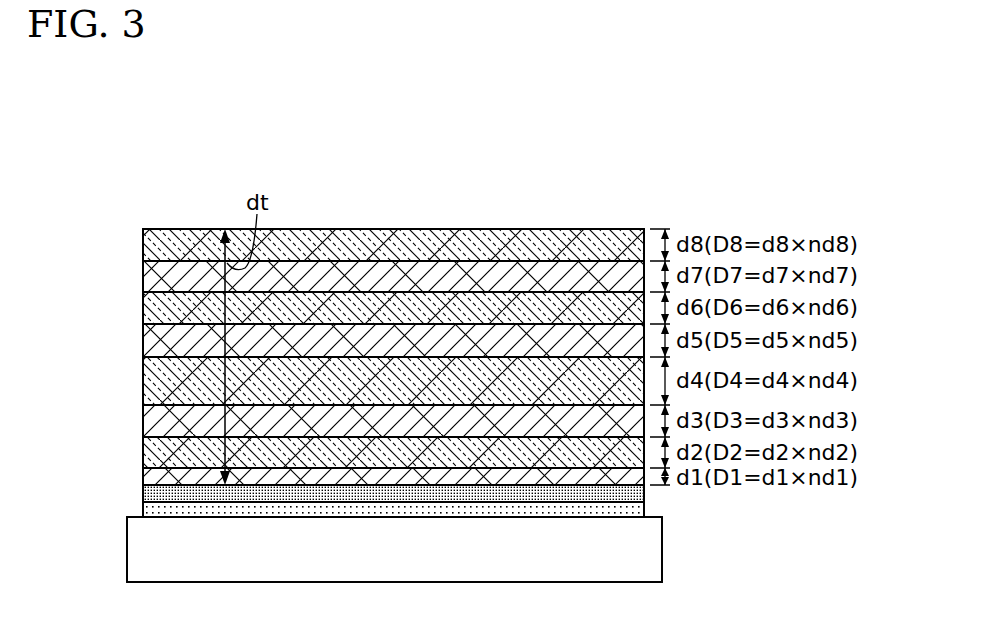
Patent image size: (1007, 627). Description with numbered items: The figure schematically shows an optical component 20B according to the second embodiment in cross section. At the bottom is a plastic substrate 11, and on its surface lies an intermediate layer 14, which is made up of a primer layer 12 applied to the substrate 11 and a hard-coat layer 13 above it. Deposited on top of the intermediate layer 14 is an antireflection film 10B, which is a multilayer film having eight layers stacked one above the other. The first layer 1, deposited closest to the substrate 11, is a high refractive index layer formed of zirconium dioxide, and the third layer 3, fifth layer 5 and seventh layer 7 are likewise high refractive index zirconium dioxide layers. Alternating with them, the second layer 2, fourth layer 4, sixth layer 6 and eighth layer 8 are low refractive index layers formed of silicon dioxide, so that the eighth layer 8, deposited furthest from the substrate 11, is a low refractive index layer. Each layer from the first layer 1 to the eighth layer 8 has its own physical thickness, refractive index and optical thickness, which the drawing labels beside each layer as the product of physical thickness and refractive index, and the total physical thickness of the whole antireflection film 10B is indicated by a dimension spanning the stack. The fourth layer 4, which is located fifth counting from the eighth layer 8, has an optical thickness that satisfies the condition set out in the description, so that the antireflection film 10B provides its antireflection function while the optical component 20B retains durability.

The optical component 20B is at (628, 157).
The antireflection film 10B is at (101, 226).
The eighth layer 8 is at (143, 247).
The seventh layer 7 is at (143, 279).
The sixth layer 6 is at (143, 310).
The fifth layer 5 is at (143, 344).
The fourth layer 4 is at (143, 382).
The third layer 3 is at (143, 420).
The second layer 2 is at (143, 452).
The first layer 1 is at (143, 477).
The intermediate layer 14 is at (760, 495).
The hard-coat layer 13 is at (645, 492).
The primer layer 12 is at (645, 510).
The substrate 11 is at (662, 548).